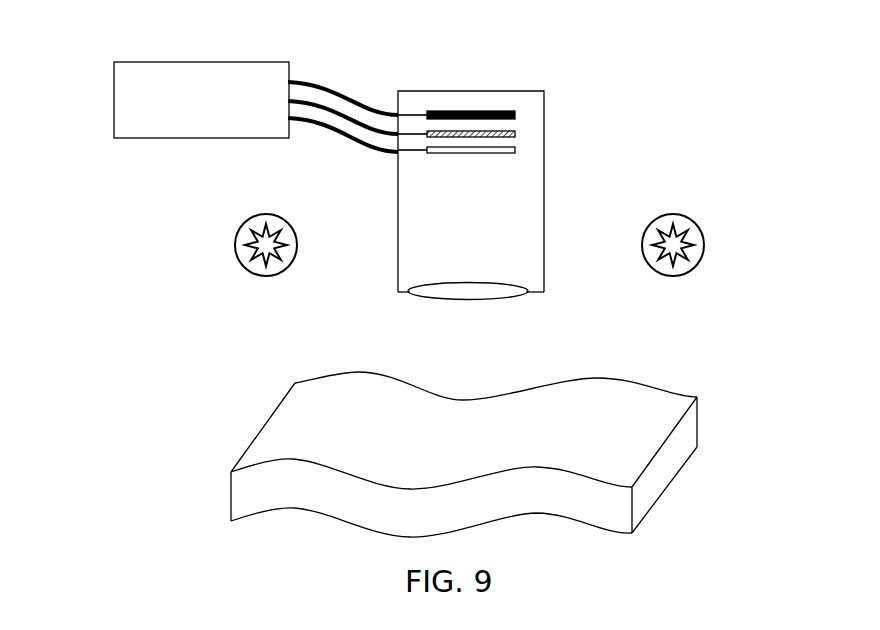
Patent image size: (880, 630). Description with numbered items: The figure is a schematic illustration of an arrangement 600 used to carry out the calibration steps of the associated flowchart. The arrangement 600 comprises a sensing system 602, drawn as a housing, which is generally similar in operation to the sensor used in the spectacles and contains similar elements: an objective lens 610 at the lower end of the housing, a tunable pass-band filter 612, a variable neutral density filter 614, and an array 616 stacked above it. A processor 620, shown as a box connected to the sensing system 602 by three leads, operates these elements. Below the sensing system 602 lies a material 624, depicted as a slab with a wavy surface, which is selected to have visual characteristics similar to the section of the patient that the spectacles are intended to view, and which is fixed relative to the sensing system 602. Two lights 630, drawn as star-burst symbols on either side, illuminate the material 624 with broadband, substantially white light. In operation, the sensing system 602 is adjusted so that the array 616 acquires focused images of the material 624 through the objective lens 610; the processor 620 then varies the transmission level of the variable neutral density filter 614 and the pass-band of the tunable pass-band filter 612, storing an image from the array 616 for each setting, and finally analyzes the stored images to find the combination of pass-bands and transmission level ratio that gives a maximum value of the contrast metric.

The arrangement 600 is at (679, 109).
The sensing system 602 is at (544, 116).
The objective lens 610 is at (524, 295).
The tunable pass-band filter 612 is at (515, 151).
The variable neutral density filter 614 is at (515, 134).
The array 616 is at (493, 110).
The processor 620 is at (113, 127).
The material 624 is at (259, 429).
The lights 630 is at (233, 248).